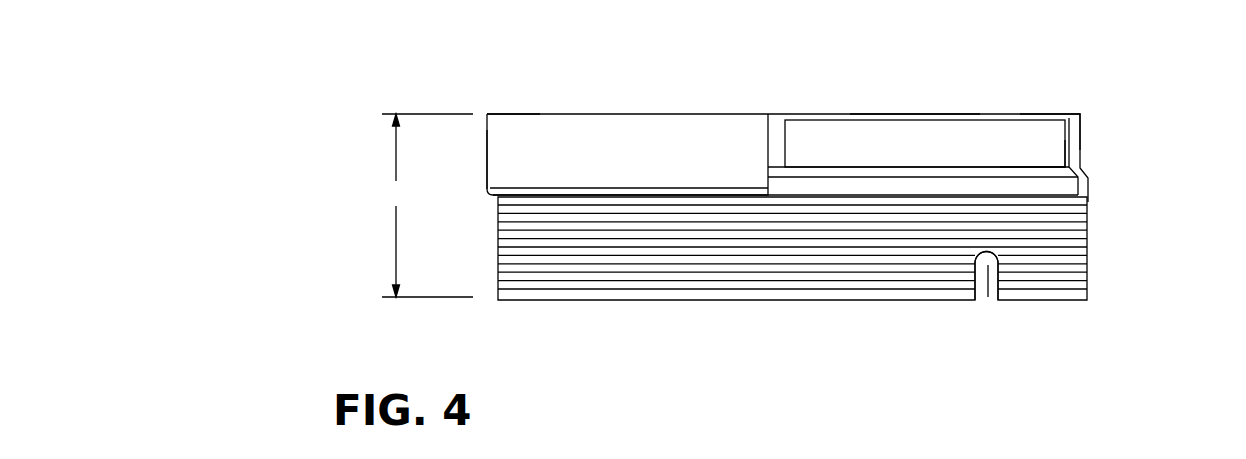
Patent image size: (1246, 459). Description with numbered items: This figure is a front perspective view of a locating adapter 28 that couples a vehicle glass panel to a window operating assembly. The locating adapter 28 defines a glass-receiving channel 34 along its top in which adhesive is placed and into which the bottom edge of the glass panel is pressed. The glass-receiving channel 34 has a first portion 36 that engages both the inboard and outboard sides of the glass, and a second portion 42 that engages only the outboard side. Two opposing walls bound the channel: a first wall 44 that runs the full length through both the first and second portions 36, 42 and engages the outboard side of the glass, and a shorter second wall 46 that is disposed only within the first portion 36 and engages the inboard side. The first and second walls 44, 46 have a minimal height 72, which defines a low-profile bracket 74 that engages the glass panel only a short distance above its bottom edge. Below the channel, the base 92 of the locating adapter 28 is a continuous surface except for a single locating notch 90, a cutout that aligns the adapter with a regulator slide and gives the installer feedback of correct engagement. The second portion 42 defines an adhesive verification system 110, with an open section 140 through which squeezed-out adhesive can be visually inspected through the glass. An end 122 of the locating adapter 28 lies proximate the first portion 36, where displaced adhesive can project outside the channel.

The locating adapter 28 is at (1008, 68).
The glass-receiving channel 34 is at (818, 140).
The first portion 36 is at (615, 145).
The second portion 42 is at (1025, 167).
The first wall 44 is at (943, 114).
The second wall 46 is at (523, 147).
The minimal height 72 is at (427, 205).
The low-profile bracket 74 is at (1102, 216).
The locating notch 90 is at (981, 305).
The base 92 is at (1062, 277).
The adhesive verification system 110 is at (880, 110).
The end 122 is at (487, 162).
The open section 140 is at (1037, 112).